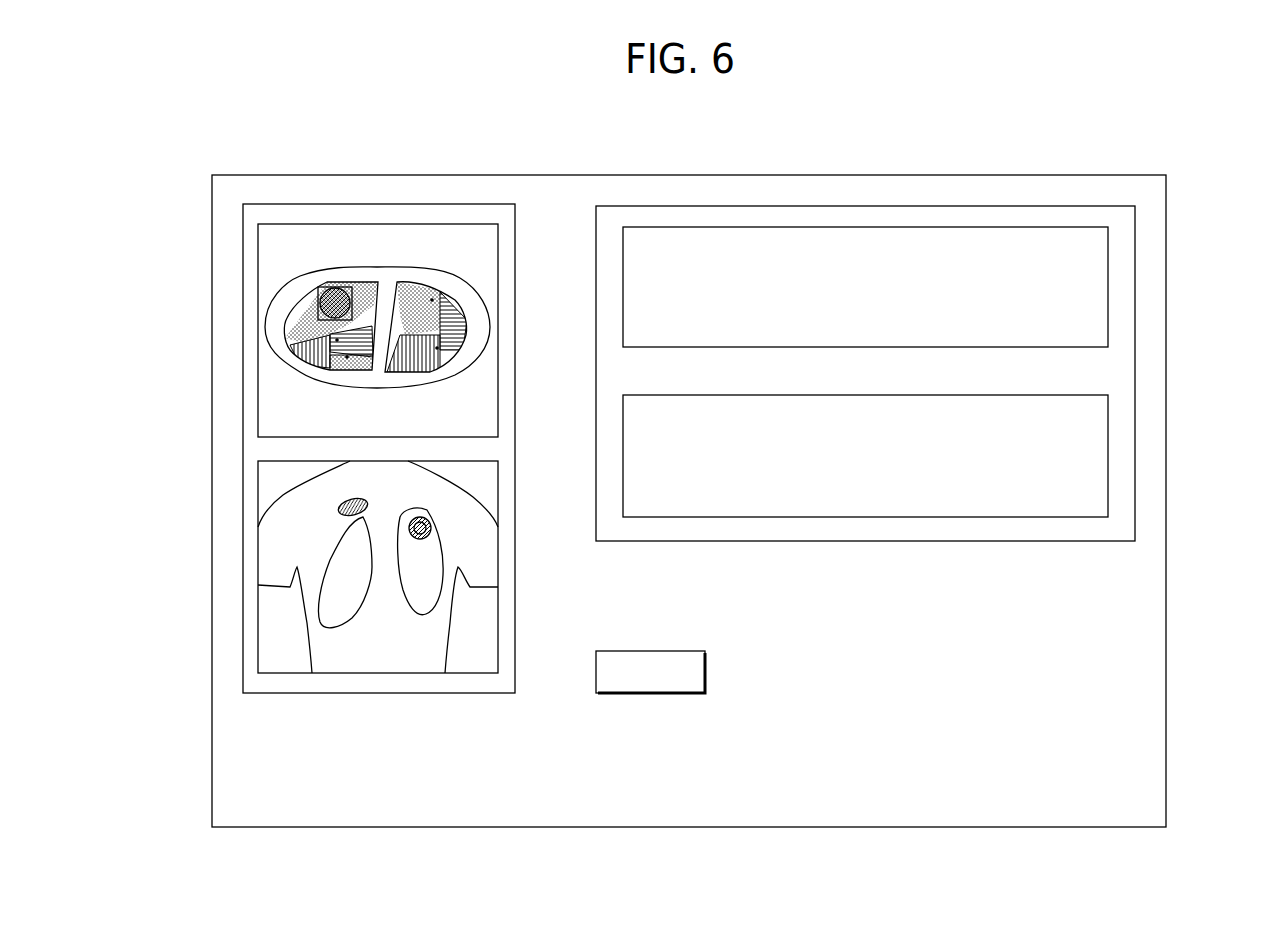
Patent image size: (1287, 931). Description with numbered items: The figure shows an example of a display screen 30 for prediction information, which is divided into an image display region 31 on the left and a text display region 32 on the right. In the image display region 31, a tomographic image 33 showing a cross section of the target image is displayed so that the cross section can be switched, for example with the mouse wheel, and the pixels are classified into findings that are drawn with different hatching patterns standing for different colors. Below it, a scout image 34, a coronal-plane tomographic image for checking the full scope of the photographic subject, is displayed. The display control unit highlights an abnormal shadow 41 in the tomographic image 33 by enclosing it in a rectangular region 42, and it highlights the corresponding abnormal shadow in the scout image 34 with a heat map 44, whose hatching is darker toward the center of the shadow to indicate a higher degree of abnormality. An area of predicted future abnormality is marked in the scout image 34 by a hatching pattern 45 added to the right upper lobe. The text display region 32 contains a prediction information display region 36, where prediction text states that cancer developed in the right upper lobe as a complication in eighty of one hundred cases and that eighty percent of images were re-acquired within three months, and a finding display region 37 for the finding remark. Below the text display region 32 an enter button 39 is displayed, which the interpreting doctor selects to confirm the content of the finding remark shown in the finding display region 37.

The display screen 30 is at (1166, 233).
The image display region 31 is at (465, 204).
The text display region 32 is at (1035, 206).
The tomographic image 33 is at (258, 260).
The scout image 34 is at (272, 499).
The prediction information display region 36 is at (890, 227).
The finding display region 37 is at (1108, 427).
The enter button 39 is at (705, 672).
The abnormal shadow 41 is at (352, 287).
The rectangular region 42 is at (318, 300).
The heat map 44 is at (412, 536).
The hatching pattern 45 is at (347, 505).